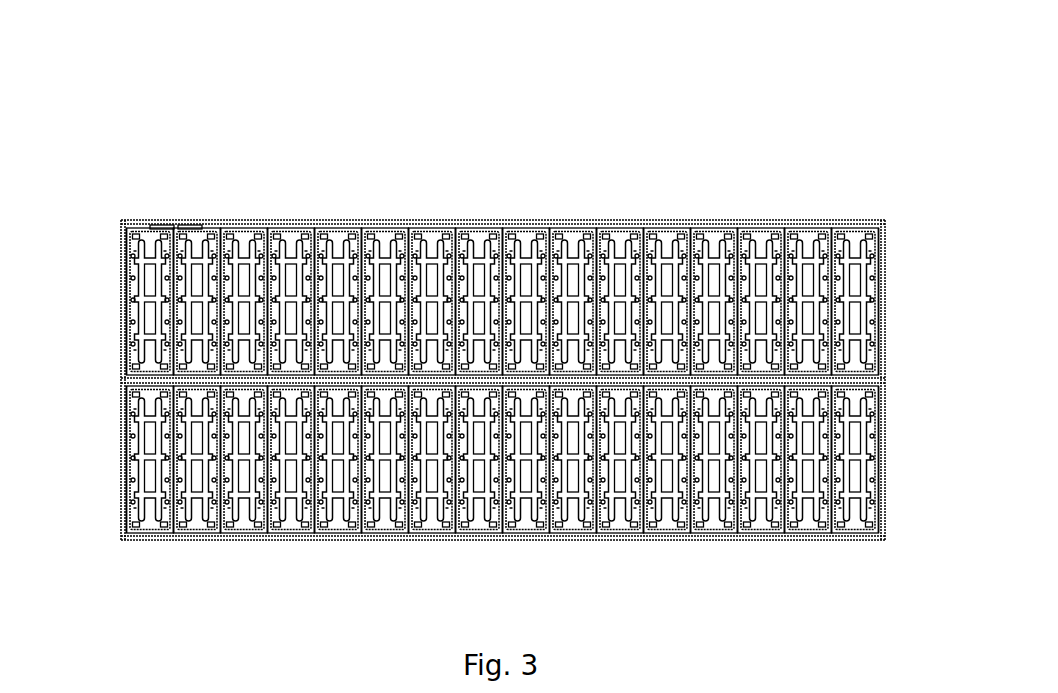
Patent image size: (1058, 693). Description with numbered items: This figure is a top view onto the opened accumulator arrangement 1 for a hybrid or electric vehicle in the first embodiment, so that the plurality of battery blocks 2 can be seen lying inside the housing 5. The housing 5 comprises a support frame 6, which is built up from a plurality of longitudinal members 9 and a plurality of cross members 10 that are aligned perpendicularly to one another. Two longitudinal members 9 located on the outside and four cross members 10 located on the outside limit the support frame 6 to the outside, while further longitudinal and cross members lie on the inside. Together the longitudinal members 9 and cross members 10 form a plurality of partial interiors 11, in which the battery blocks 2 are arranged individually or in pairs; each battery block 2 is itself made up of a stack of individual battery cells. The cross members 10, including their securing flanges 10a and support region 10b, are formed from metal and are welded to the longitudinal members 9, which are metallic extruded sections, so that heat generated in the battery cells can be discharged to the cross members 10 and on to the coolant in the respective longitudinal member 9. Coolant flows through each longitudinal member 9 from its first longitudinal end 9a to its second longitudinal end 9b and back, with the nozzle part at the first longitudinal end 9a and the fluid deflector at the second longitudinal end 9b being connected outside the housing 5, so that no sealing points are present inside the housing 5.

The accumulator arrangement 1 is at (886, 166).
The battery block 2 is at (603, 235).
The housing 5 is at (774, 322).
The support frame 6 is at (756, 211).
The longitudinal member 9 is at (481, 223).
The first longitudinal end 9a is at (121, 221).
The second longitudinal end 9b is at (885, 221).
The cross member 10 is at (122, 291).
The securing flange 10a is at (190, 229).
The support region 10b is at (160, 229).
The partial interior 11 is at (338, 229).